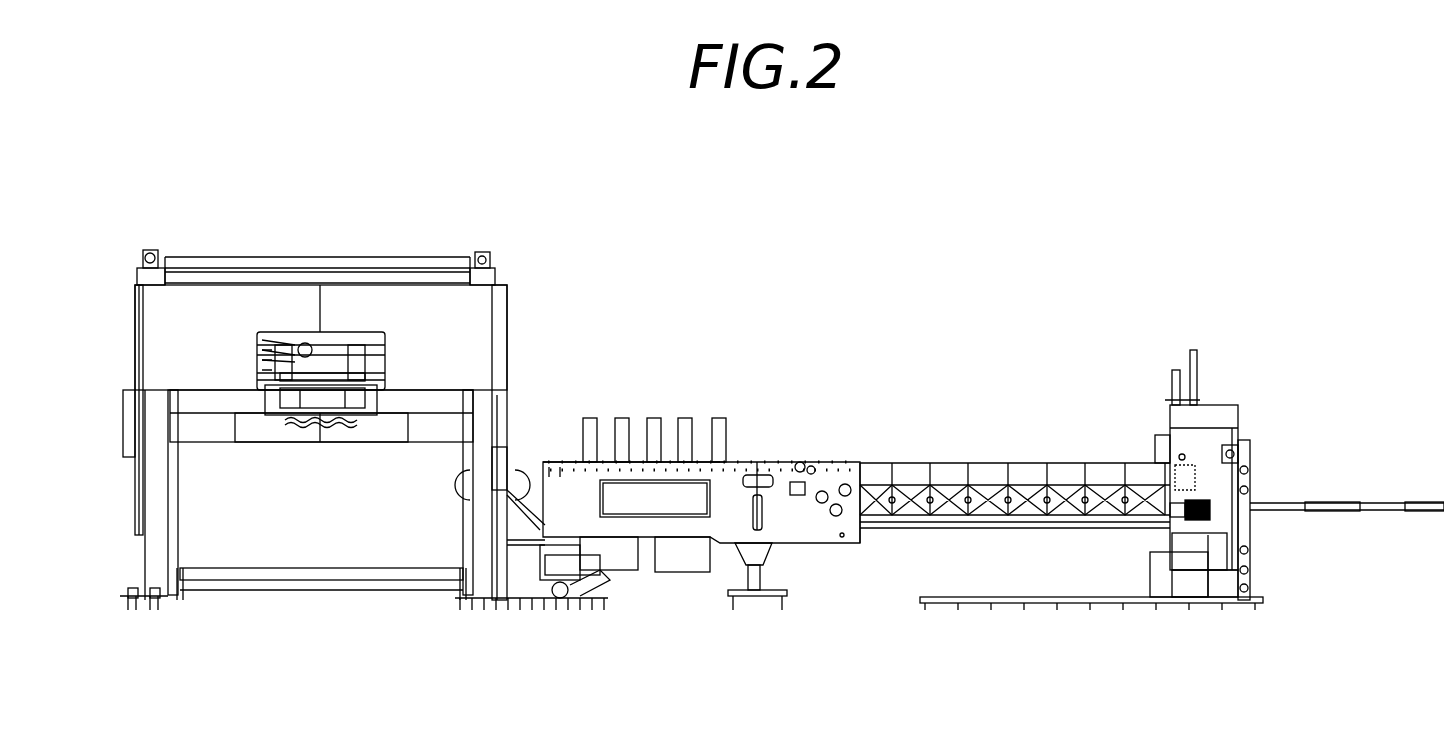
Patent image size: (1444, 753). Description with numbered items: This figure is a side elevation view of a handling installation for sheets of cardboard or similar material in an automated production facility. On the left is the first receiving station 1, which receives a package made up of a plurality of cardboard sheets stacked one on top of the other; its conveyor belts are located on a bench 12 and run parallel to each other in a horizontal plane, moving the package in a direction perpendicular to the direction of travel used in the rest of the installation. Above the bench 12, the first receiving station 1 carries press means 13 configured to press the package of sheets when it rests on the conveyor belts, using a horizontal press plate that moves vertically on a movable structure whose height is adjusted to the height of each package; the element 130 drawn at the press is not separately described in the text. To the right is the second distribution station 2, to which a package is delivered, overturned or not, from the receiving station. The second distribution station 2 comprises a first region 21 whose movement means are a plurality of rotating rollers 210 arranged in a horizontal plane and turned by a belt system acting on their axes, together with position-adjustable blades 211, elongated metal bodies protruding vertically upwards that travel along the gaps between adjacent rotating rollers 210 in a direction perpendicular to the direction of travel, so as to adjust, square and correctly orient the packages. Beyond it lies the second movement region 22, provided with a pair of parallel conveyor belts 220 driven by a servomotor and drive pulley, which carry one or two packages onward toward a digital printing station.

The first receiving station 1 is at (338, 216).
The press means 13 is at (262, 367).
The tool holder 130 is at (385, 390).
The bench 12 is at (160, 537).
The second distribution station 2 is at (918, 273).
The first region 21 is at (756, 423).
The rotating rollers 210 is at (568, 463).
The blades 211 is at (687, 420).
The conveyor belts 220 is at (945, 457).
The second movement region 22 is at (1101, 440).